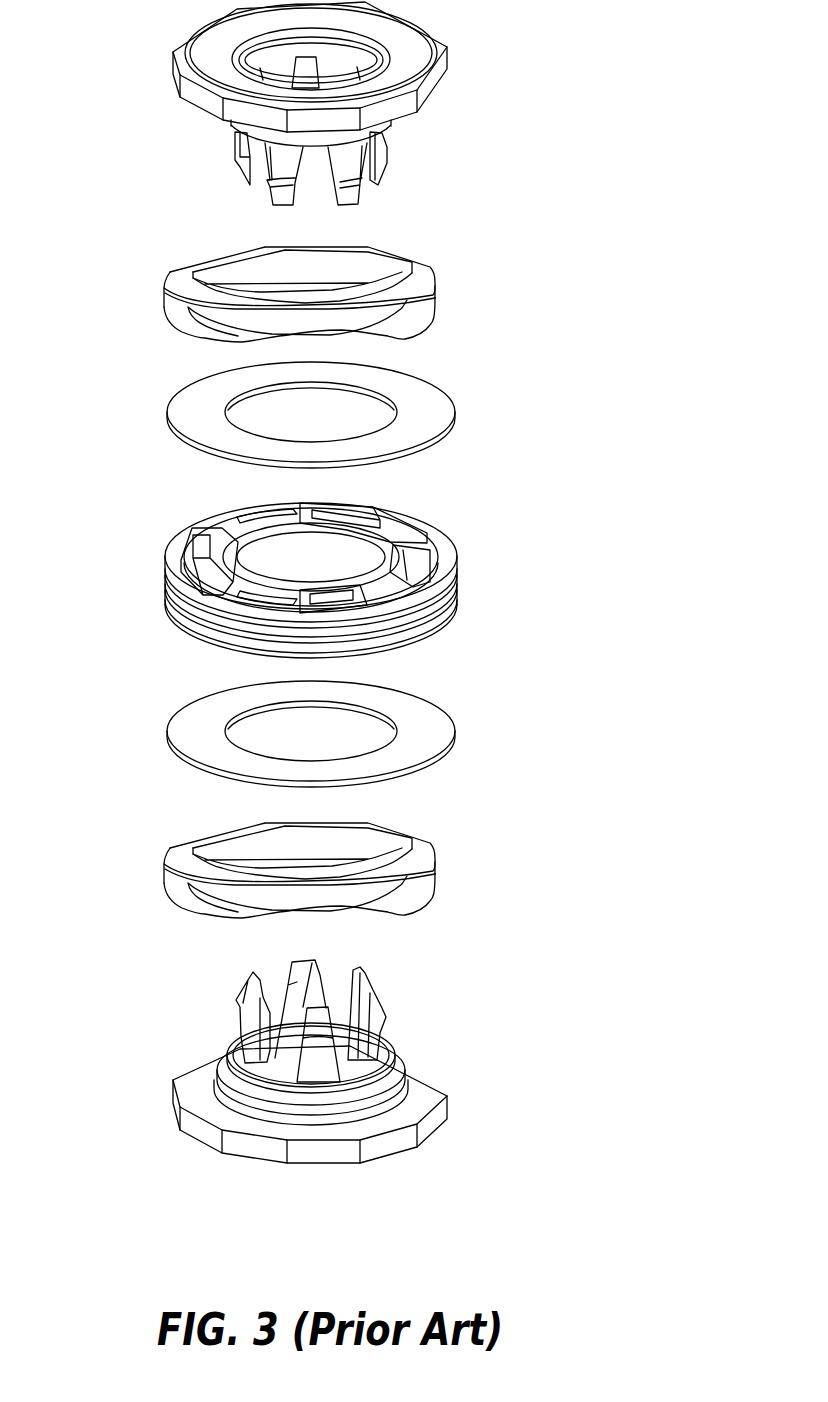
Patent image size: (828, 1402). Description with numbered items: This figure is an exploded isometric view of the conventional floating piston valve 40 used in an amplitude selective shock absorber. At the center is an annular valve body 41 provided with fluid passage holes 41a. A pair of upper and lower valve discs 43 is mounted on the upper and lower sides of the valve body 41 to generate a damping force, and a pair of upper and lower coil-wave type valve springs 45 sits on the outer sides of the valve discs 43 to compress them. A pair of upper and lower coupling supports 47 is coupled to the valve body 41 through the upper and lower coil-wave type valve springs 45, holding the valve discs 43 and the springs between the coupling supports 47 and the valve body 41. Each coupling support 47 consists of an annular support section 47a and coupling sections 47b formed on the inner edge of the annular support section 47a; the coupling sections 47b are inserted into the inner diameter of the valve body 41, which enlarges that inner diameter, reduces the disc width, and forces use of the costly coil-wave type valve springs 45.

The floating piston valve 40 is at (379, 625).
The annular valve body 41 is at (341, 561).
The fluid passage holes 41a is at (393, 529).
The valve discs 43 is at (455, 415).
The coil-wave type valve springs 45 is at (430, 295).
The coupling supports 47 is at (319, 625).
The annular support section 47a is at (175, 77).
The coupling sections 47b is at (237, 147).